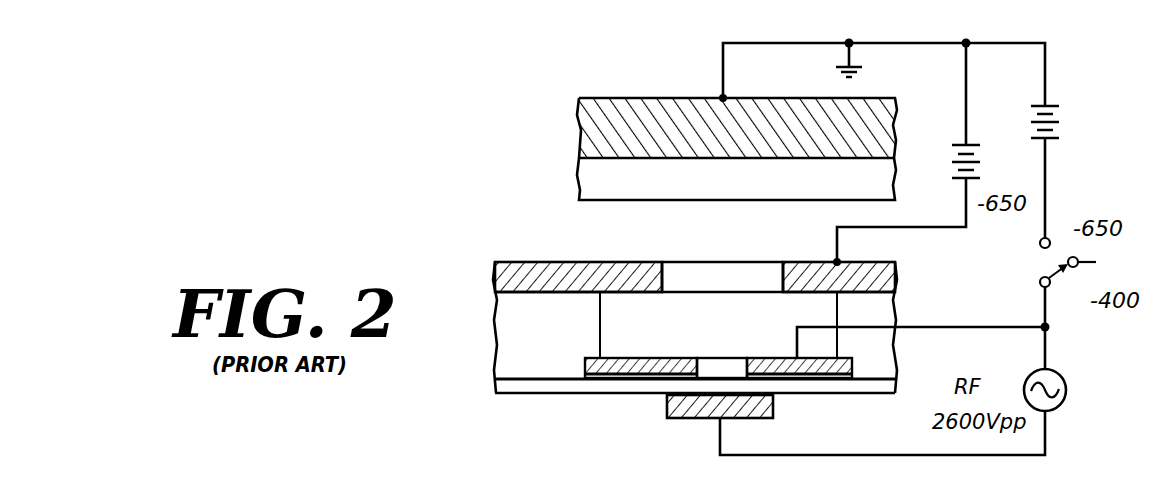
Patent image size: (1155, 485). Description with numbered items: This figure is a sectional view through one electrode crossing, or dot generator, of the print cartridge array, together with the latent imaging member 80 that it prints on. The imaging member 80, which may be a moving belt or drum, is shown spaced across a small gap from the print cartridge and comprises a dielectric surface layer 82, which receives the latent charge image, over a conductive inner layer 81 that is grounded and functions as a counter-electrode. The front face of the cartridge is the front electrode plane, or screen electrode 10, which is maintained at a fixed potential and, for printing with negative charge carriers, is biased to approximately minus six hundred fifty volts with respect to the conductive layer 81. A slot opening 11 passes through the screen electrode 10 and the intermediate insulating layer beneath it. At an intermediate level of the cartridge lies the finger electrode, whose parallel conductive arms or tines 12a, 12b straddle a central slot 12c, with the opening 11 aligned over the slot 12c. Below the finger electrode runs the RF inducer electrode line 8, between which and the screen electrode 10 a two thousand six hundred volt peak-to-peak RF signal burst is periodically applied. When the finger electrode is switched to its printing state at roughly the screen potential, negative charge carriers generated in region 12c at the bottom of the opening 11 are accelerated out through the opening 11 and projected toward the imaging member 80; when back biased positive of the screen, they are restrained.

The RF inducer electrode line 8 is at (700, 419).
The front electrode plane 10 is at (510, 262).
The slot opening 11 is at (683, 268).
The conductive arm 12a is at (596, 358).
The conductive arm 12b is at (790, 358).
The central slot 12c is at (720, 360).
The latent imaging member 80 is at (696, 144).
The conductive inner layer 81 is at (580, 113).
The dielectric surface layer 82 is at (578, 177).